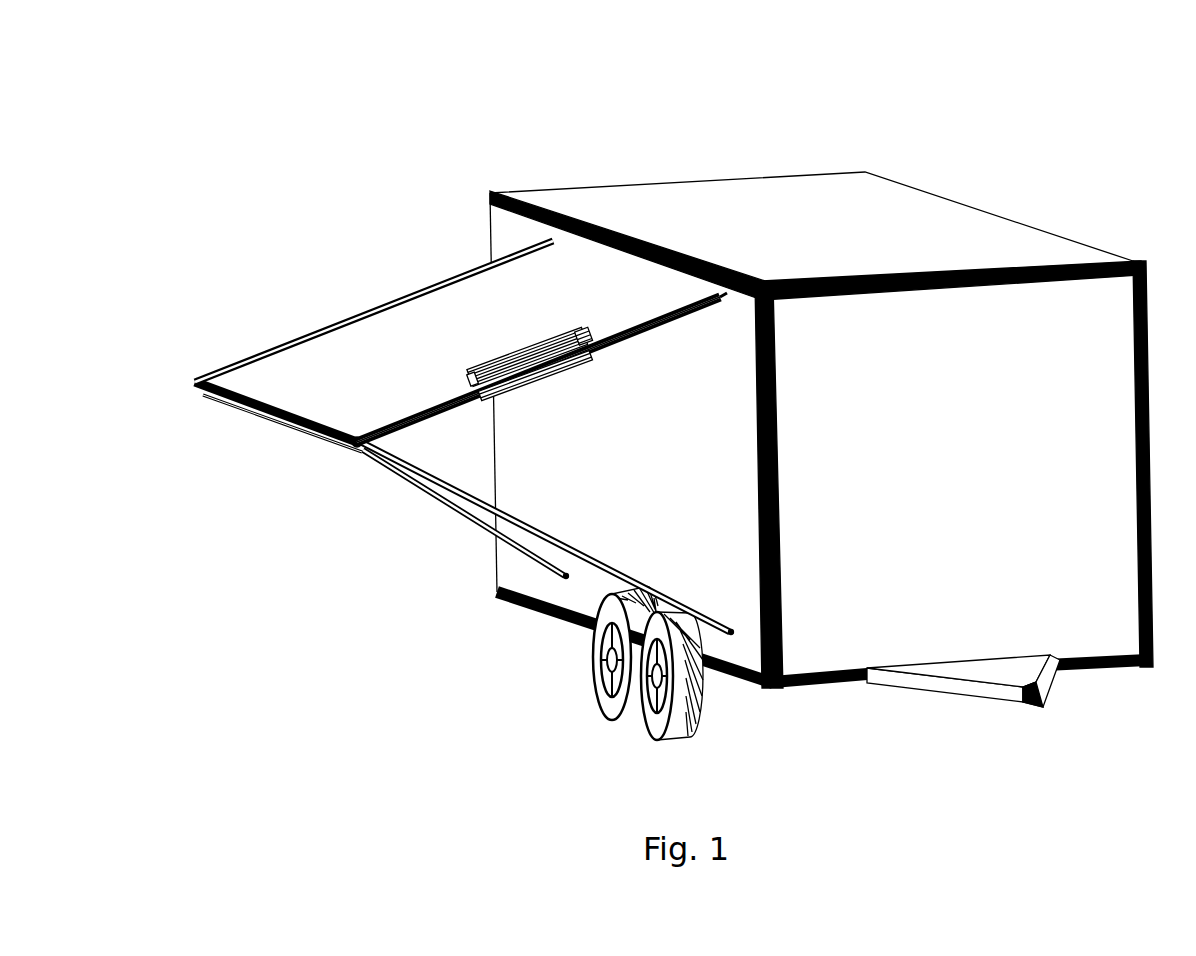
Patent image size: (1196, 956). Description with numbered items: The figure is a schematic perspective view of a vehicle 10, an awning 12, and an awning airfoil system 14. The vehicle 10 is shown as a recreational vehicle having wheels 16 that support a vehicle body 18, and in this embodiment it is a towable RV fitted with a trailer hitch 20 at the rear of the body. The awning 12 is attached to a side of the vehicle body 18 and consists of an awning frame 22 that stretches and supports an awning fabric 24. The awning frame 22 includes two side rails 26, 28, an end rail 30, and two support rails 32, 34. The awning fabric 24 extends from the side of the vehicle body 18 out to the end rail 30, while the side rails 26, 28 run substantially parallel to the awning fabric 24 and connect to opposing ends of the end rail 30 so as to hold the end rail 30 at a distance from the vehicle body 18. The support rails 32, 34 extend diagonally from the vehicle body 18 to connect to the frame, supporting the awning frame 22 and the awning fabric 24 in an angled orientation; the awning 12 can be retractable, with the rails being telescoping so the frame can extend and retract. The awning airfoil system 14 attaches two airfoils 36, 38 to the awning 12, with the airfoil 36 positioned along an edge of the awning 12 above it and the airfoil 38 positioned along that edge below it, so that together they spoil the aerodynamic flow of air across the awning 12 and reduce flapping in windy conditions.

The vehicle 10 is at (827, 370).
The awning 12 is at (461, 342).
The awning airfoil system 14 is at (531, 386).
The wheels 16 is at (597, 700).
The vehicle body 18 is at (952, 196).
The trailer hitch 20 is at (983, 695).
The awning frame 22 is at (518, 537).
The awning fabric 24 is at (268, 373).
The side rail 26 is at (444, 287).
The side rail 28 is at (632, 320).
The end rail 30 is at (213, 402).
The support rail 32 is at (448, 522).
The support rail 34 is at (485, 505).
The airfoil 36 is at (483, 362).
The airfoil 38 is at (518, 385).